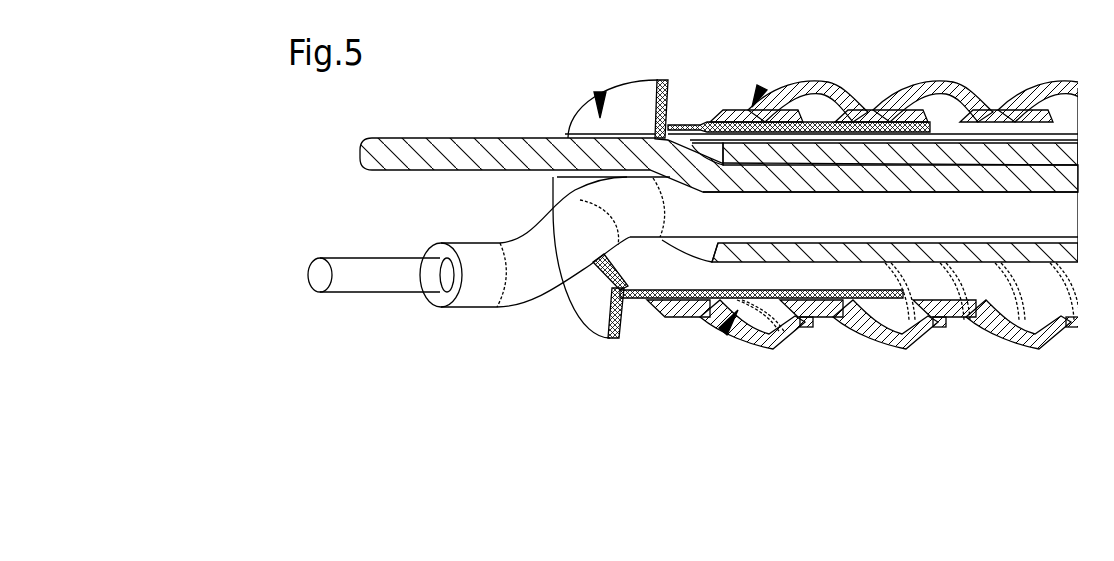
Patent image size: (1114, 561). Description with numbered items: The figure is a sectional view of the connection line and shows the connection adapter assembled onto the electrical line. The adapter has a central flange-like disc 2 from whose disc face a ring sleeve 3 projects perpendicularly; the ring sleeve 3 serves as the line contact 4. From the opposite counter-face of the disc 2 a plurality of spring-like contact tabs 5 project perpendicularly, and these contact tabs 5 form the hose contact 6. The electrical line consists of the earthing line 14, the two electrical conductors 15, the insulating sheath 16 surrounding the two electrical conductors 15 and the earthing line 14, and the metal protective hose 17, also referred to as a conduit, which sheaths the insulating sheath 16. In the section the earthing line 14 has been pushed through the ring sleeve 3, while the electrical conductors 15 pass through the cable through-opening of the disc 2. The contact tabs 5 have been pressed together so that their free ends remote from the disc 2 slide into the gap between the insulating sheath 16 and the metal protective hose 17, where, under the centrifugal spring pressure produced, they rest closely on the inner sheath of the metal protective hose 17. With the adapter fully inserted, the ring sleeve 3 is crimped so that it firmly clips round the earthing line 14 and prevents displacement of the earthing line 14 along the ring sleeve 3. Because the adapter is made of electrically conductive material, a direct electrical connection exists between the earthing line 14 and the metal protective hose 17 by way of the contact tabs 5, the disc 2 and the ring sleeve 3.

The flange-like disc 2 is at (656, 100).
The ring sleeve 3 is at (568, 137).
The line contact 4 is at (600, 93).
The contact tabs 5 is at (637, 277).
The hose contact 6 is at (722, 332).
The earthing line 14 is at (430, 150).
The electrical conductors 15 is at (368, 284).
The insulating sheath 16 is at (822, 147).
The metal protective hose 17 is at (760, 87).